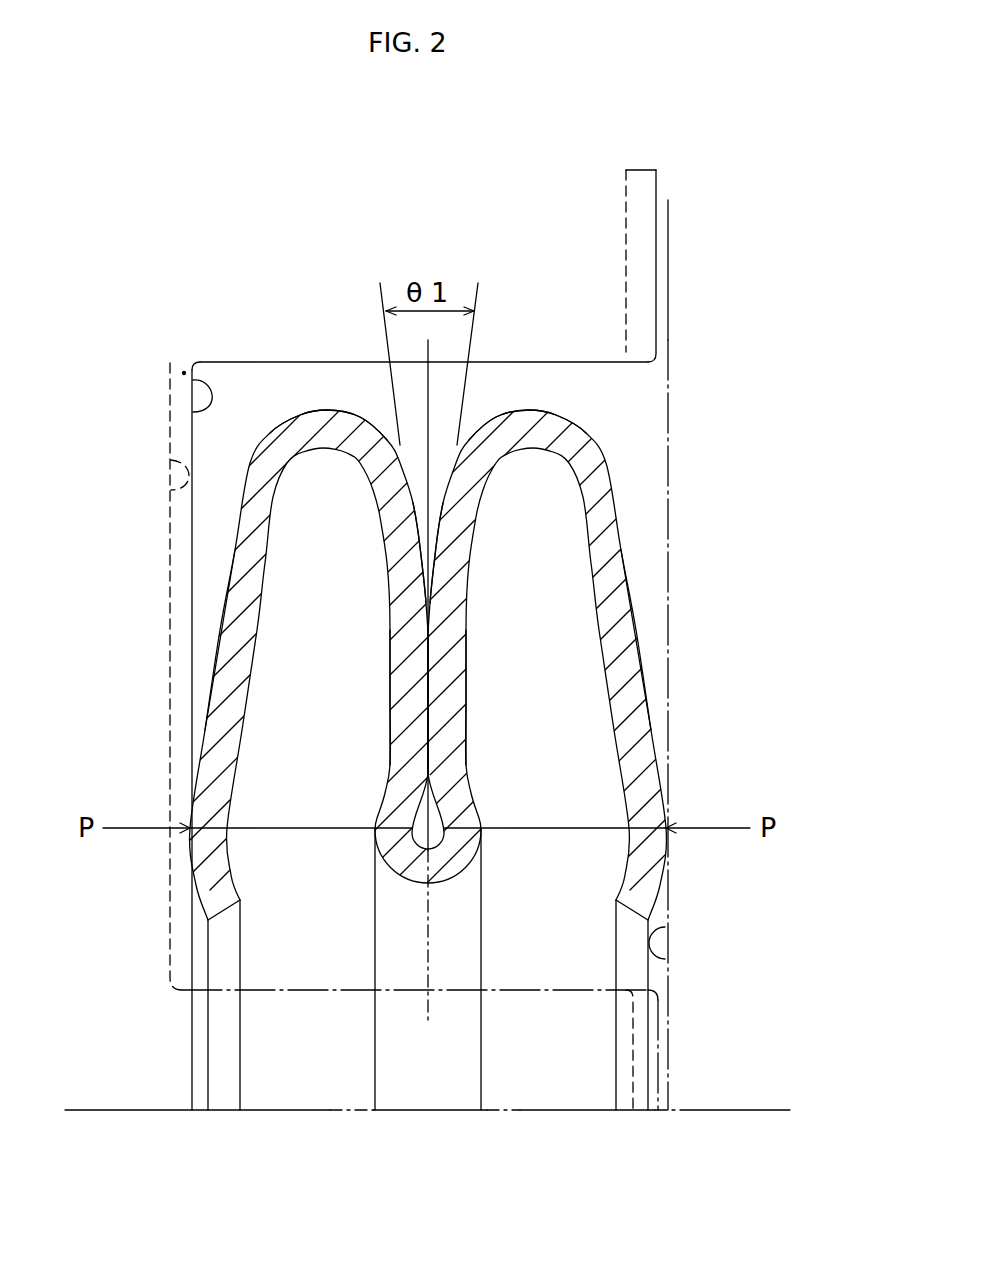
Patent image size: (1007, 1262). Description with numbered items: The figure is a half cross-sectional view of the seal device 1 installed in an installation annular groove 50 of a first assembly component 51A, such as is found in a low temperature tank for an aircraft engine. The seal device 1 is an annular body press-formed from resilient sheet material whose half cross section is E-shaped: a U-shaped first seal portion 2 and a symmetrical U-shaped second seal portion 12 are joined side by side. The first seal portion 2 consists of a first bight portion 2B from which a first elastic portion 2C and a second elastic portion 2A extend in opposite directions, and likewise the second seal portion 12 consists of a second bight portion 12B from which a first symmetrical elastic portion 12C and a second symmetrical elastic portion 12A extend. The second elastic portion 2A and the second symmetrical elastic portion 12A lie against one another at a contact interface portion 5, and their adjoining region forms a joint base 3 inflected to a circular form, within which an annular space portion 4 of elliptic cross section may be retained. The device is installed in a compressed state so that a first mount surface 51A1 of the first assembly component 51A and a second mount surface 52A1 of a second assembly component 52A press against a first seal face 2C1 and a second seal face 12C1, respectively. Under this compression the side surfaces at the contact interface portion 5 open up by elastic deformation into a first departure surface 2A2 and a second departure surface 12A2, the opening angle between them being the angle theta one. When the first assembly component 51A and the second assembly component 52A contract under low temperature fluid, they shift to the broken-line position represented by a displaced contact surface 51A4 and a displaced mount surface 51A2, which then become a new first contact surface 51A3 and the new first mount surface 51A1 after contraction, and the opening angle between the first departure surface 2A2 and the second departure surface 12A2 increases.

The seal device 1 is at (702, 494).
The first seal portion 2 is at (655, 710).
The second seal portion 12 is at (186, 753).
The joint base 3 is at (445, 872).
The annular space portion 4 is at (433, 817).
The contact interface portion 5 is at (430, 755).
The second elastic portion 2A is at (447, 672).
The first departure surface 2A2 is at (440, 575).
The first bight portion 2B is at (532, 410).
The first elastic portion 2C is at (620, 590).
The first seal face 2C1 is at (666, 840).
The second symmetrical elastic portion 12A is at (393, 675).
The second departure surface 12A2 is at (415, 533).
The second bight portion 12B is at (325, 410).
The first symmetrical elastic portion 12C is at (240, 612).
The second seal face 12C1 is at (193, 878).
The installation annular groove 50 is at (612, 403).
The first assembly component 51A is at (612, 183).
The first mount surface 51A1 is at (192, 400).
The displaced mount surface 51A2 is at (170, 487).
The new first contact surface 51A3 is at (656, 253).
The displaced contact surface 51A4 is at (627, 273).
The second assembly component 52A is at (698, 217).
The second mount surface 52A1 is at (665, 960).